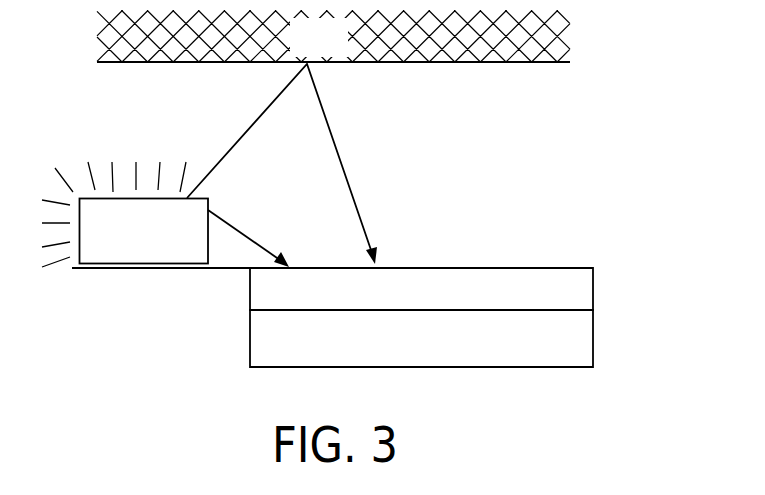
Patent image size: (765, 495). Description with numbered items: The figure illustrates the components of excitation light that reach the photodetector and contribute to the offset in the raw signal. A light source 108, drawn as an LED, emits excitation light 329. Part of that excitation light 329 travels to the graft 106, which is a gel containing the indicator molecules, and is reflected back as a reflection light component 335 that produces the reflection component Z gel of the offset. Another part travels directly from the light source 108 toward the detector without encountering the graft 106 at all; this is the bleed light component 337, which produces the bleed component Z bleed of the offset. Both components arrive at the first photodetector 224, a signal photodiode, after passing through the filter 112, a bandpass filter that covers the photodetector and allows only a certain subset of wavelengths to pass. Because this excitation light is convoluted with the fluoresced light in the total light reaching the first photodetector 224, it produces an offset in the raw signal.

The graft 106 is at (530, 63).
The light source 108 is at (98, 265).
The excitation light 329 is at (114, 191).
The bleed light component 337 is at (212, 209).
The reflection light component 335 is at (367, 222).
The filter 112 is at (593, 293).
The first photodetector 224 is at (593, 340).